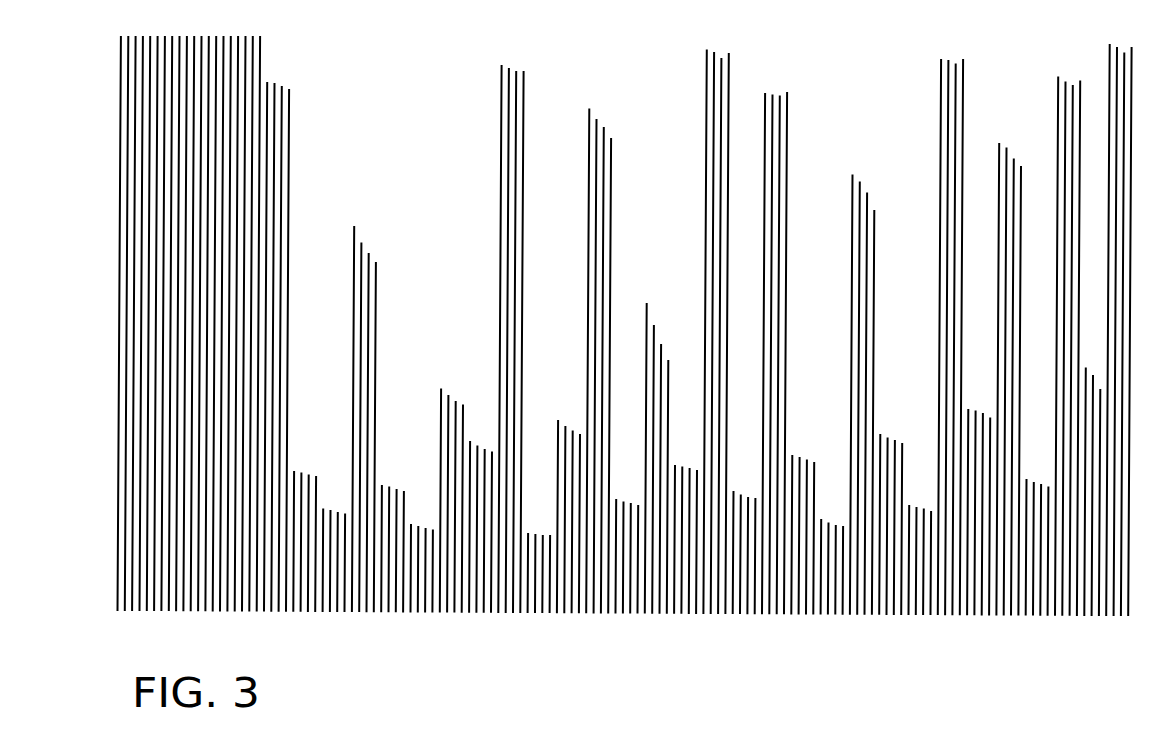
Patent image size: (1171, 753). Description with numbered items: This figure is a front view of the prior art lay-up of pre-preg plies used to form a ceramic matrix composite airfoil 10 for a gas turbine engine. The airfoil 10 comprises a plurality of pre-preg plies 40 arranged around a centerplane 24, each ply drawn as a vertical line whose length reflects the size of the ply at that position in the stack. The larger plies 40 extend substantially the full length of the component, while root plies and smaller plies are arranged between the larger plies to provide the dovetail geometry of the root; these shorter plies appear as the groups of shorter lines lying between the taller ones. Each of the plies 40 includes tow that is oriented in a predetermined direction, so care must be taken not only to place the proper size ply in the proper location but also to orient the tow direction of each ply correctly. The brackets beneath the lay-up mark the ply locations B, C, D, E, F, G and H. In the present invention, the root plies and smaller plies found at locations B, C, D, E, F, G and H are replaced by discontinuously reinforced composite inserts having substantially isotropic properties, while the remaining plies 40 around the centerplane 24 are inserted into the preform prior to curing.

The airfoil 10 is at (497, 660).
The pre-preg plies 40 is at (198, 612).
The centerplane 24 is at (1128, 617).
The ply location B is at (287, 614).
The ply location C is at (578, 615).
The ply location D is at (608, 616).
The ply location E is at (723, 616).
The ply location F is at (782, 617).
The ply location G is at (955, 618).
The ply location H is at (1070, 618).